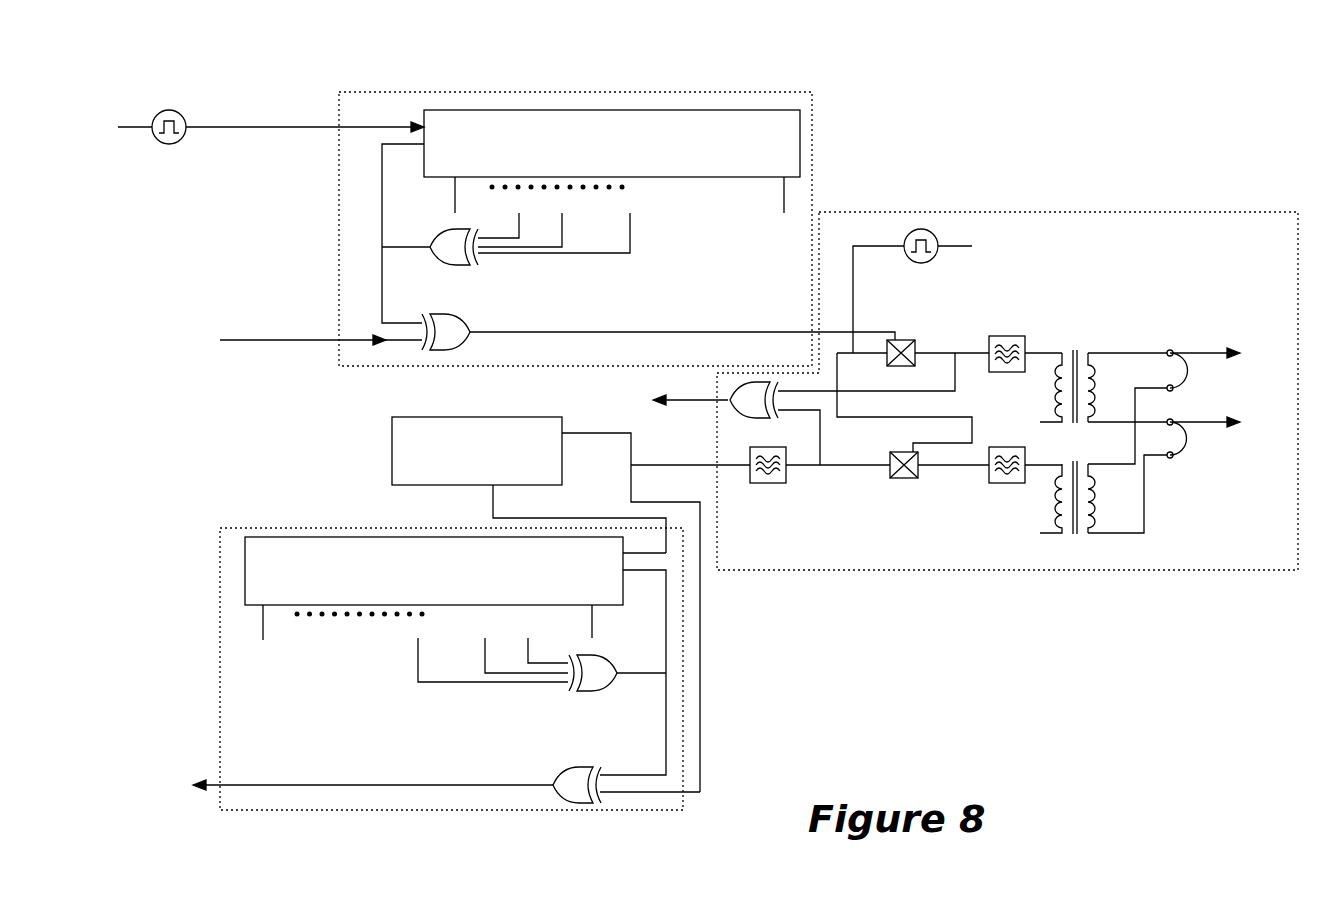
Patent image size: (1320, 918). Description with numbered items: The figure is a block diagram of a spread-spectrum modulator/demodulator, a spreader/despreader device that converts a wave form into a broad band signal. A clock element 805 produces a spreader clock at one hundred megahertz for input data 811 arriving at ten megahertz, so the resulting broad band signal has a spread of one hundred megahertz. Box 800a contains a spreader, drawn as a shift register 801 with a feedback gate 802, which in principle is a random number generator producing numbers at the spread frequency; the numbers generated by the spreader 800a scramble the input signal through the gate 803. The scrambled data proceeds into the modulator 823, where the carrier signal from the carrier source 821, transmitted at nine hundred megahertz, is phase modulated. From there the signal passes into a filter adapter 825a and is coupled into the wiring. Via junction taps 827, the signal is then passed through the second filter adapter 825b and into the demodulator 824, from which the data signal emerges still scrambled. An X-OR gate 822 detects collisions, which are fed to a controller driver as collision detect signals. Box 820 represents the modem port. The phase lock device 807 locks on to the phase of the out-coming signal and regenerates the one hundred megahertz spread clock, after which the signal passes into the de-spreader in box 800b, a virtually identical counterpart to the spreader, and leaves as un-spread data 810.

The spreader 800a is at (376, 80).
The spreader clock source 805 is at (169, 146).
The shift register 801 is at (591, 216).
The exclusive-OR feedback gate 802 is at (454, 265).
The gate 803 is at (450, 313).
The input data 811 is at (272, 342).
The de-spreader 800b is at (271, 506).
The phase lock device 807 is at (571, 604).
The un-spread data 810 is at (213, 788).
The modem port 820 is at (856, 606).
The carrier oscillator 821 is at (925, 264).
The X-OR gate 822 is at (752, 418).
The modulator 823 is at (900, 340).
The demodulator 824 is at (913, 479).
The filter adapter 825a is at (1075, 348).
The filter adapter 825b is at (1075, 537).
The junction taps 827 is at (1193, 375).